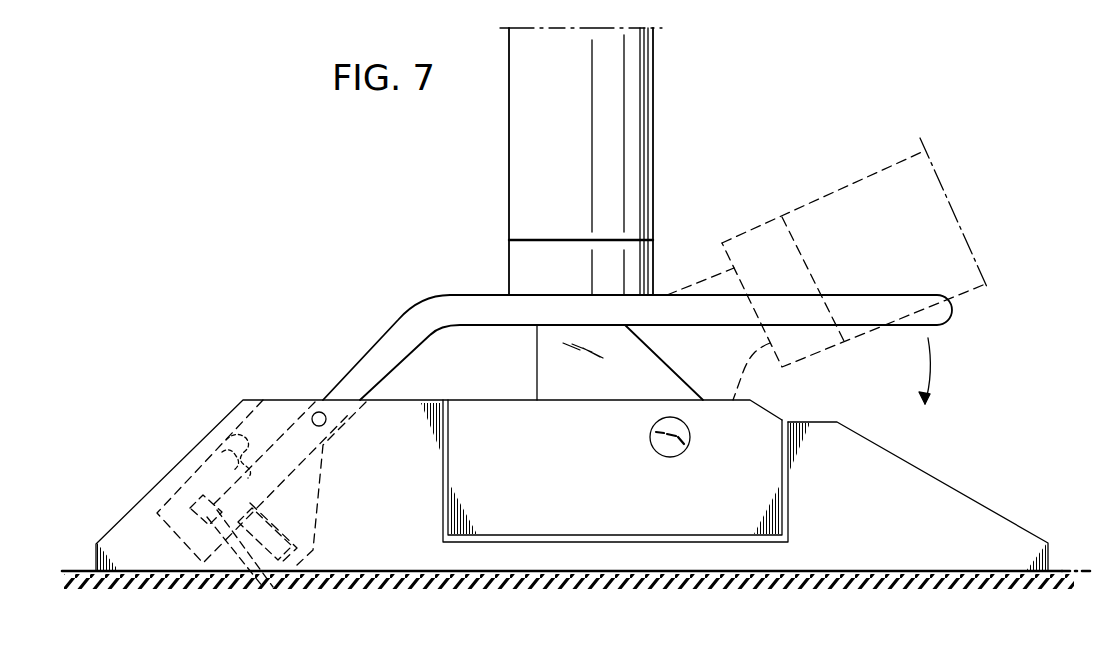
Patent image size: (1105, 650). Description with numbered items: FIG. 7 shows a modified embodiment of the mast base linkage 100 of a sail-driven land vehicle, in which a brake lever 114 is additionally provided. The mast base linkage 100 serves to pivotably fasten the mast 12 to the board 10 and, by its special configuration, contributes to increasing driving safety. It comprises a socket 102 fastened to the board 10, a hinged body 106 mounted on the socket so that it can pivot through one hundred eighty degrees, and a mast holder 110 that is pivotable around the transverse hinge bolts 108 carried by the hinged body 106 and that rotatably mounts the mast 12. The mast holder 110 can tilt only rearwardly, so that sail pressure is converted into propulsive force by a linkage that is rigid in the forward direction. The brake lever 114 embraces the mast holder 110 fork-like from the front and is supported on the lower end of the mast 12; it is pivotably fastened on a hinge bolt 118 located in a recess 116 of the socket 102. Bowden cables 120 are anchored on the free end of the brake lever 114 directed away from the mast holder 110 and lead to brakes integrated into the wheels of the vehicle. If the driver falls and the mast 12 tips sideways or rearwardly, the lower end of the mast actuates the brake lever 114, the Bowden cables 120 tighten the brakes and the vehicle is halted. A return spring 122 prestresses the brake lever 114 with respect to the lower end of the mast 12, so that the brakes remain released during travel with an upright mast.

The board 10 is at (1067, 572).
The mast 12 is at (645, 123).
The mast base linkage 100 is at (938, 456).
The socket 102 is at (974, 520).
The hinged body 106 is at (766, 426).
The hinge bolts 108 is at (672, 457).
The mast holder 110 is at (538, 357).
The brake lever 114 is at (412, 318).
The recess 116 is at (178, 490).
The hinge bolt 118 is at (318, 412).
The Bowden cables 120 is at (257, 573).
The return spring 122 is at (247, 432).